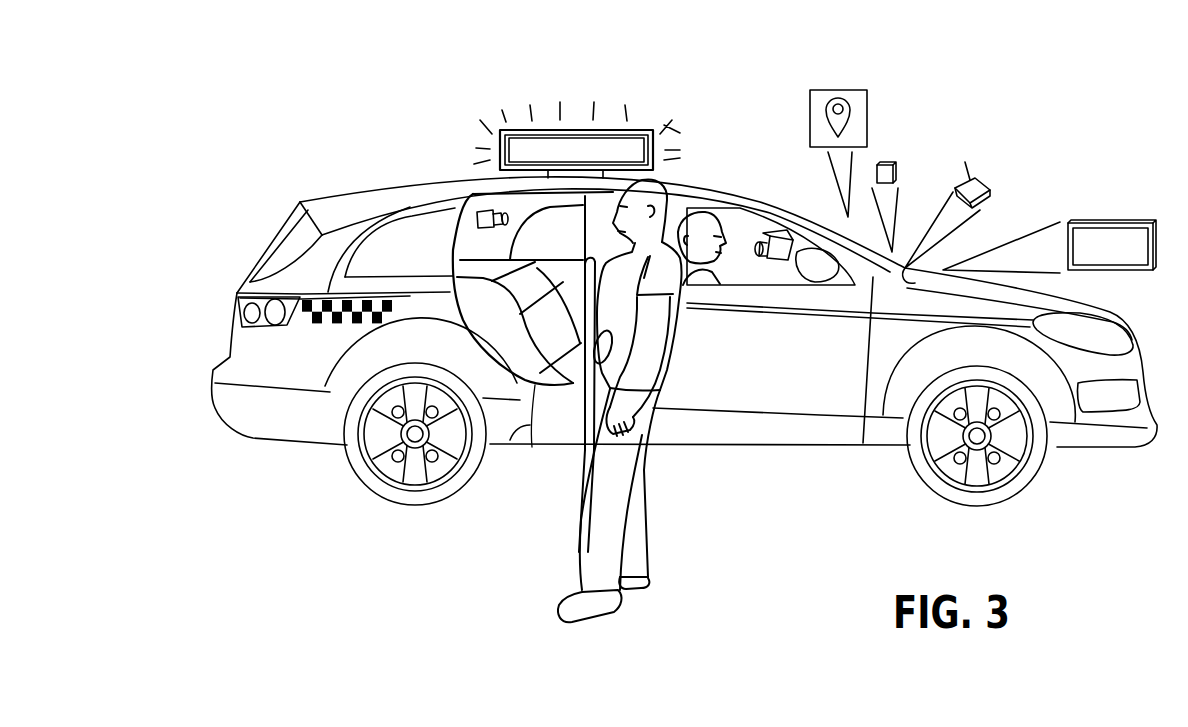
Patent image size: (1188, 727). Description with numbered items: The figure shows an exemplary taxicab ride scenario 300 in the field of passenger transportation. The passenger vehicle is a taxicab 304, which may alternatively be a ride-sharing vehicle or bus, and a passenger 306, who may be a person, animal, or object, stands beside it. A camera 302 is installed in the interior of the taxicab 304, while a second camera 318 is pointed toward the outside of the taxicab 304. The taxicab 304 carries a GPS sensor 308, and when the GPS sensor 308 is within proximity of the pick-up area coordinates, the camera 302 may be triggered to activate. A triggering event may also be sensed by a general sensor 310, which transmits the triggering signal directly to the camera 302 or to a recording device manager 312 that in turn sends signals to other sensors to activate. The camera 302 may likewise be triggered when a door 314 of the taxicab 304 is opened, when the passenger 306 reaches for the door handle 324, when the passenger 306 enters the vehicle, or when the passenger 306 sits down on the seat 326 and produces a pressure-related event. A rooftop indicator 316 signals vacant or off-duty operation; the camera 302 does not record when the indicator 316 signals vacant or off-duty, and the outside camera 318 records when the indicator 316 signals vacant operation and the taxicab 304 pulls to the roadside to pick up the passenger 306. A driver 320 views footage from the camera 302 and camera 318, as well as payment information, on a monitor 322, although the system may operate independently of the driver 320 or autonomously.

The autonomous vehicle system environment 300 is at (331, 112).
The camera 302 is at (780, 228).
The taxicab 304 is at (335, 196).
The passenger 306 is at (640, 507).
The GPS sensor 308 is at (830, 97).
The general sensor 310 is at (880, 163).
The recording device manager 312 is at (977, 183).
The door 314 is at (577, 487).
The rooftop indicator 316 is at (629, 130).
The camera 318 is at (468, 203).
The driver 320 is at (703, 208).
The monitor 322 is at (1117, 222).
The door handle 324 is at (587, 408).
The seat 326 is at (530, 427).